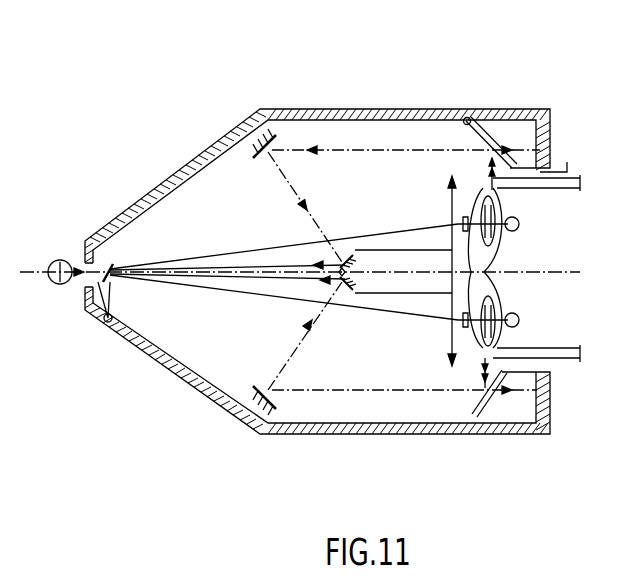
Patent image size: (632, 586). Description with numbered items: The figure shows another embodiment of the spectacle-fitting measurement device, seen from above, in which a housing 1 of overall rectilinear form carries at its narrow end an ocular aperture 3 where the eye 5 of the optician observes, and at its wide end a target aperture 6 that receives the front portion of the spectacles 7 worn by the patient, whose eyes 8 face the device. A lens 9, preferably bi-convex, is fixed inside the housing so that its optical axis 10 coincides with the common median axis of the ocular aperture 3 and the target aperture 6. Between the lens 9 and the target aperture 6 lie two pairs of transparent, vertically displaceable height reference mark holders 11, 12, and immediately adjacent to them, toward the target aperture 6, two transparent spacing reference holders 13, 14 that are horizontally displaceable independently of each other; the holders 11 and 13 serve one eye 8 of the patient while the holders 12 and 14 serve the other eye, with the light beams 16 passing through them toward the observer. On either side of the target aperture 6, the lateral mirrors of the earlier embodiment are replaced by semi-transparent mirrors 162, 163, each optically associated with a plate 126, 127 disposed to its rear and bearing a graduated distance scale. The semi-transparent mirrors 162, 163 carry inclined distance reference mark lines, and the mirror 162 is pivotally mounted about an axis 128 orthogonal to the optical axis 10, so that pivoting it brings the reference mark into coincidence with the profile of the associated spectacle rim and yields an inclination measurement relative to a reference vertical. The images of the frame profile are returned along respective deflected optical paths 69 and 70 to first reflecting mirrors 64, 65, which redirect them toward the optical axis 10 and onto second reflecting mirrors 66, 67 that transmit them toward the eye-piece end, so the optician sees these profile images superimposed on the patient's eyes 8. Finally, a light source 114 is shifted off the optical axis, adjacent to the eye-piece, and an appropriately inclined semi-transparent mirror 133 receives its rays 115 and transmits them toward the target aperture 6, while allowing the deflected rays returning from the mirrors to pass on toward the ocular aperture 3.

The housing 1 is at (372, 108).
The ocular aperture 3 is at (86, 288).
The eye of the optician 5 is at (60, 258).
The target aperture 6 is at (540, 362).
The spectacles 7 is at (582, 360).
The eyes of the patient 8 is at (520, 223).
The lens 9 is at (445, 293).
The optical axis 10 is at (545, 271).
The pair of height reference mark holders 11 is at (503, 233).
The pair of height reference mark holders 12 is at (497, 338).
The spacing reference holder 13 is at (474, 203).
The spacing reference holder 14 is at (490, 300).
The light beams 16 is at (275, 255).
The first reflecting mirror 64 is at (246, 149).
The first reflecting mirror 65 is at (250, 405).
The second reflecting mirror 66 is at (344, 255).
The second reflecting mirror 67 is at (348, 292).
The deflected optical path 69 is at (388, 150).
The deflected optical path 70 is at (370, 390).
The light source 114 is at (106, 323).
The rays 115 is at (115, 283).
The plate 126 is at (540, 133).
The plate 127 is at (534, 398).
The axis 128 is at (470, 116).
The semi-transparent mirror 133 is at (107, 260).
The semi-transparent mirror 162 is at (500, 122).
The semi-transparent mirror 163 is at (497, 412).